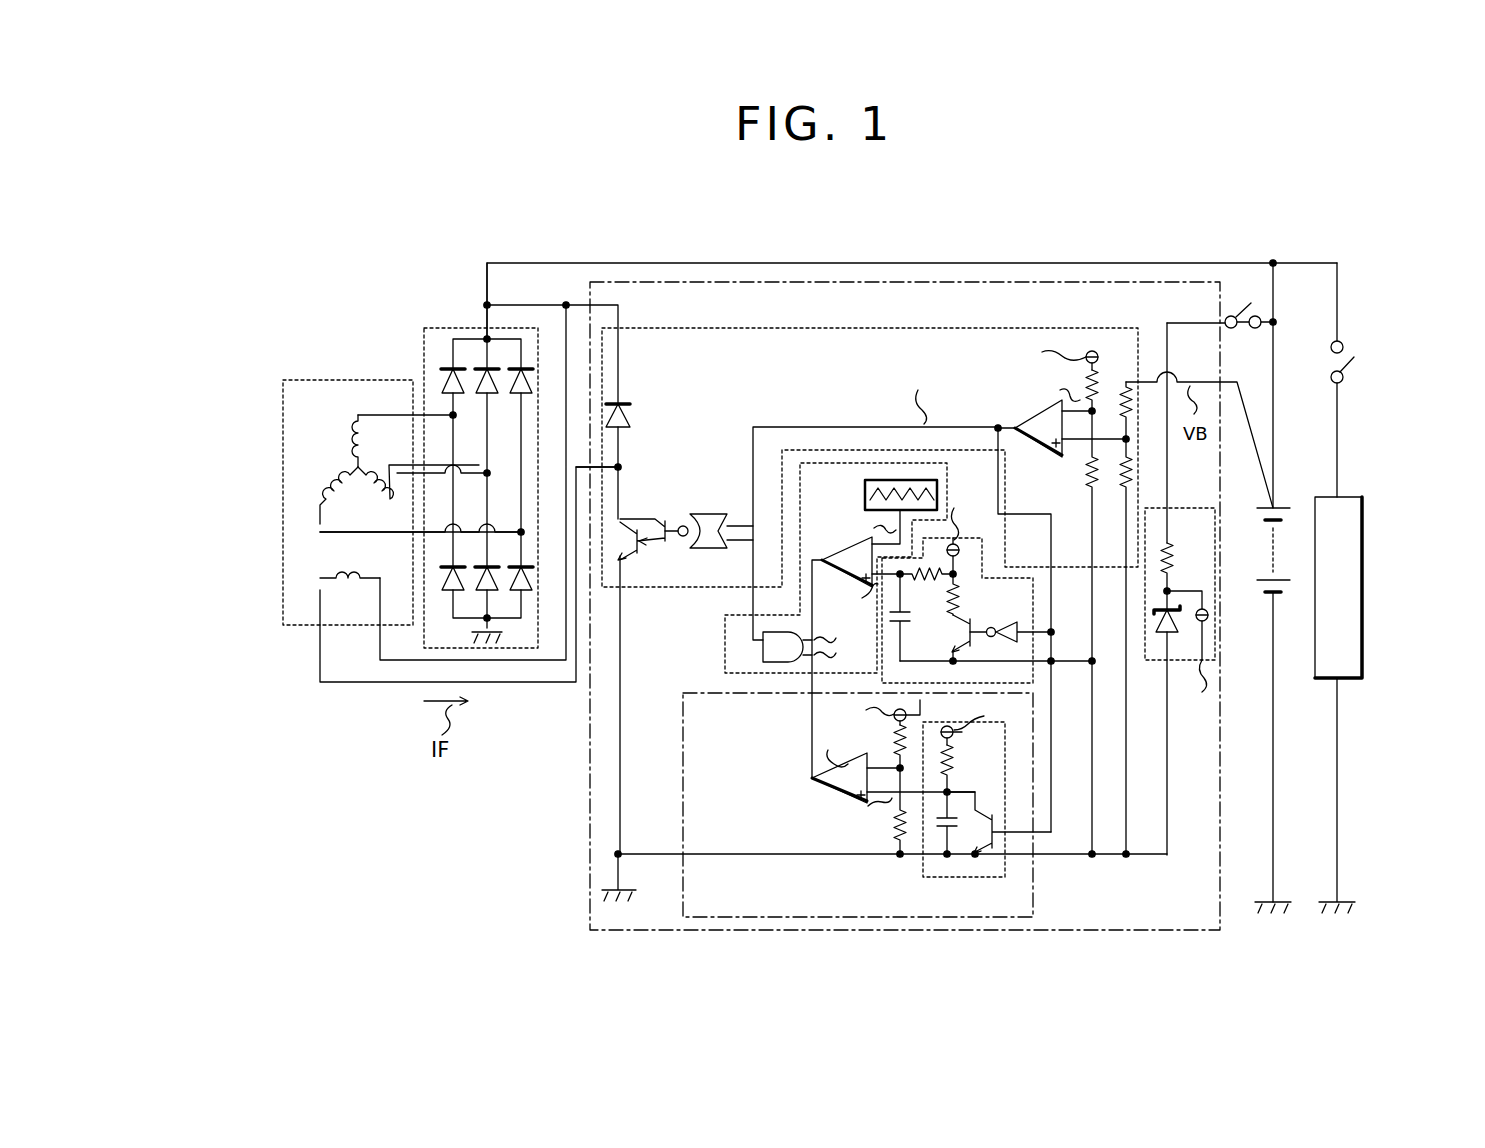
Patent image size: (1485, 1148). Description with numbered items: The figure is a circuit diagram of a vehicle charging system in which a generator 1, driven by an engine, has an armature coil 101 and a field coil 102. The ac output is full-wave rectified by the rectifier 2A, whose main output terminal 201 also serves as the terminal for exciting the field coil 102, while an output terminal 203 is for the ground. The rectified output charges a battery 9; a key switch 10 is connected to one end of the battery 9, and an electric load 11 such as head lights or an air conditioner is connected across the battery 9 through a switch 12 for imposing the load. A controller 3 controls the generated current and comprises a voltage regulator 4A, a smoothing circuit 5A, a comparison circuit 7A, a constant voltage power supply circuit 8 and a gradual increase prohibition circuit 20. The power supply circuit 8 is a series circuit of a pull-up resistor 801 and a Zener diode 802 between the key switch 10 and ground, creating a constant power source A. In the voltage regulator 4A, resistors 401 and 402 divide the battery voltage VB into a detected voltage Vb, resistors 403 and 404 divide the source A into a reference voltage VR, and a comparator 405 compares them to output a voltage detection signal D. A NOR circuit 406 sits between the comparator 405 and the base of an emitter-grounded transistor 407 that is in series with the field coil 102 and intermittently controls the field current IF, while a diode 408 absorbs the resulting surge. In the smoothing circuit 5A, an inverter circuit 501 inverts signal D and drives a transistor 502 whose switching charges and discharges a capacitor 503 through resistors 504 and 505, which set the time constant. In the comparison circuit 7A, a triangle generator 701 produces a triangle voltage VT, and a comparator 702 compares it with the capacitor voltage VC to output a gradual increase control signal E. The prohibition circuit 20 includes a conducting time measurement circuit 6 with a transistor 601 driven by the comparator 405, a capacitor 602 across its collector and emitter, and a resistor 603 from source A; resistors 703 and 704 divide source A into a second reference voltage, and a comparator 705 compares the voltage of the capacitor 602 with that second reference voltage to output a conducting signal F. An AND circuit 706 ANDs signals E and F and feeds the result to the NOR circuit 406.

The generator 1 is at (376, 502).
The armature coil 101 is at (335, 470).
The field coil 102 is at (340, 578).
The rectifier 2A is at (445, 322).
The main output terminal 201 is at (488, 337).
The output terminal for the ground 203 is at (510, 632).
The controller 3 is at (588, 809).
The voltage regulator 4A is at (820, 326).
The resistor 401 is at (1098, 357).
The resistor 402 is at (1122, 470).
The resistor 403 is at (1084, 386).
The resistor 404 is at (1086, 470).
The comparator 405 is at (1036, 418).
The NOR circuit 406 is at (716, 516).
The transistor 407 is at (644, 499).
The diode 408 is at (633, 408).
The smoothing circuit 5A is at (990, 608).
The inverter circuit 501 is at (1010, 620).
The transistor 502 is at (966, 654).
The capacitor 503 is at (944, 644).
The resistor 504 is at (962, 594).
The resistor 505 is at (898, 641).
The conducting time measurement circuit 6 is at (983, 803).
The transistor 601 is at (996, 817).
The capacitor 602 is at (954, 828).
The resistor 603 is at (952, 754).
The comparison circuit 7A is at (796, 572).
The triangle generator 701 is at (864, 492).
The comparator 702 is at (850, 544).
The resistor 703 is at (952, 730).
The resistor 704 is at (898, 842).
The comparator 705 is at (839, 754).
The AND circuit 706 is at (762, 640).
The constant voltage power supply circuit 8 is at (1170, 589).
The pull-up resistor 801 is at (1179, 574).
The Zener diode 802 is at (1160, 632).
The battery 9 is at (1288, 506).
The key switch 10 is at (1238, 330).
The electric load 11 is at (1362, 578).
The switch 12 is at (1348, 346).
The gradual increase prohibition circuit 20 is at (859, 805).